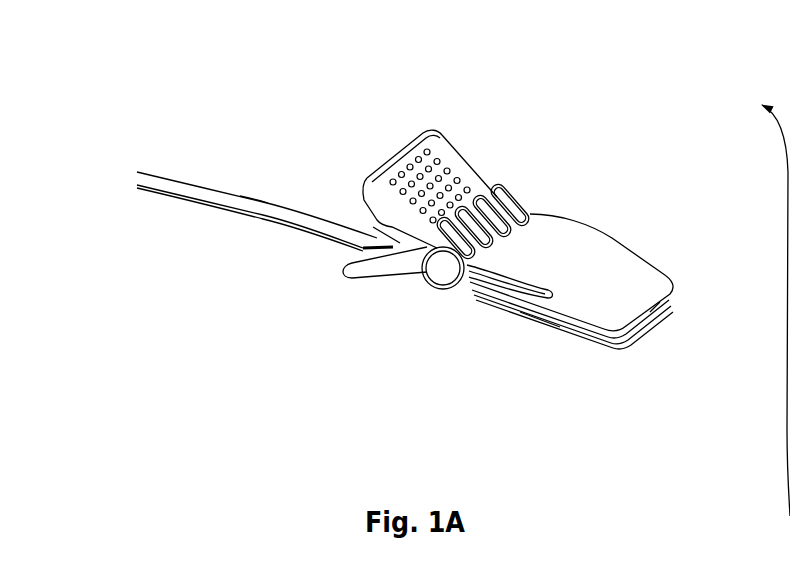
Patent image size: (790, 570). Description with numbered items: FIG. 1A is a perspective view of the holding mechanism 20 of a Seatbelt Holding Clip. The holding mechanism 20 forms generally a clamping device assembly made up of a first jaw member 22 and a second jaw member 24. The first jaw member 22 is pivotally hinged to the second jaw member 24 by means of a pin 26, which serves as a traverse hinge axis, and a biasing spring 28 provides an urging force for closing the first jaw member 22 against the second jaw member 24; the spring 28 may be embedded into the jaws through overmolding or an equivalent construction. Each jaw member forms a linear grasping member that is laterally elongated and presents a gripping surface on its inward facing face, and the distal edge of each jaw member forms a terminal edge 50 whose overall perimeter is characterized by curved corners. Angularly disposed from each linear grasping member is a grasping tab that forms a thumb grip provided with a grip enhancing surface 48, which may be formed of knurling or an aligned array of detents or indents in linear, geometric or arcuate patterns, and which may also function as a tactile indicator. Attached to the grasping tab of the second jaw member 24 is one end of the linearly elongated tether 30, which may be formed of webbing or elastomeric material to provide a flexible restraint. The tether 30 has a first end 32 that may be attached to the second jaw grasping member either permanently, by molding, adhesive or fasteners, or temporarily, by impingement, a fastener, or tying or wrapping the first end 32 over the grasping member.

The holding mechanism 20 is at (138, 337).
The first jaw member 22 is at (578, 247).
The second jaw member 24 is at (555, 328).
The pin 26 is at (442, 274).
The biasing spring 28 is at (519, 293).
The tether 30 is at (198, 208).
The first end 32 is at (267, 203).
The grip enhancing surface 48 is at (405, 177).
The terminal edge 50 is at (652, 323).